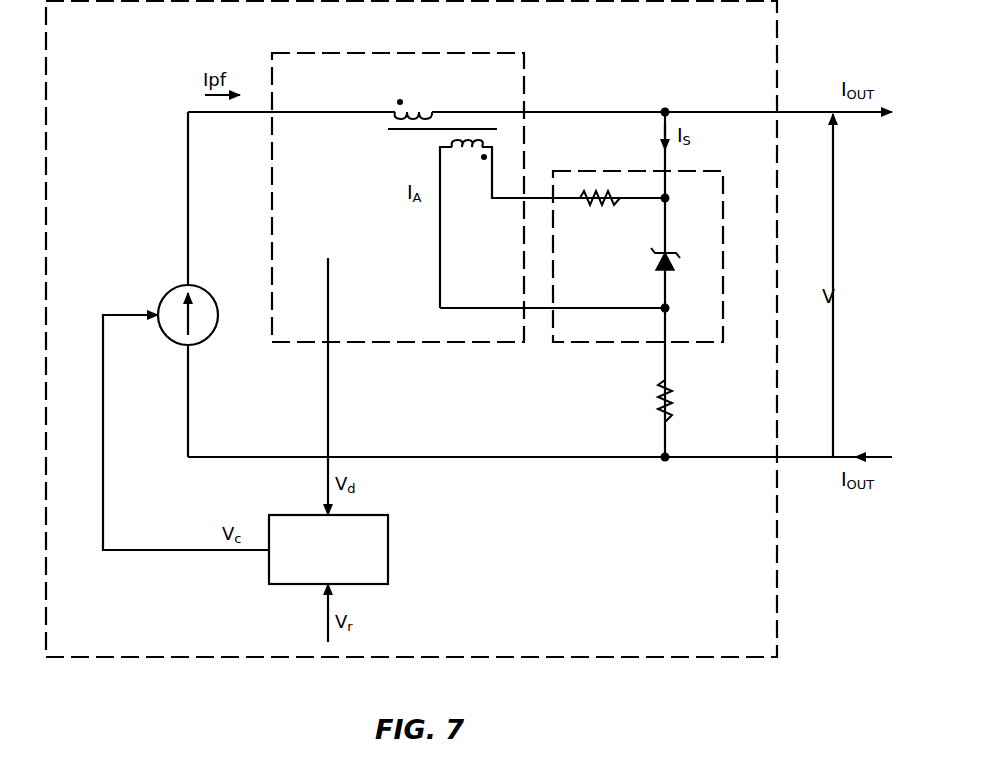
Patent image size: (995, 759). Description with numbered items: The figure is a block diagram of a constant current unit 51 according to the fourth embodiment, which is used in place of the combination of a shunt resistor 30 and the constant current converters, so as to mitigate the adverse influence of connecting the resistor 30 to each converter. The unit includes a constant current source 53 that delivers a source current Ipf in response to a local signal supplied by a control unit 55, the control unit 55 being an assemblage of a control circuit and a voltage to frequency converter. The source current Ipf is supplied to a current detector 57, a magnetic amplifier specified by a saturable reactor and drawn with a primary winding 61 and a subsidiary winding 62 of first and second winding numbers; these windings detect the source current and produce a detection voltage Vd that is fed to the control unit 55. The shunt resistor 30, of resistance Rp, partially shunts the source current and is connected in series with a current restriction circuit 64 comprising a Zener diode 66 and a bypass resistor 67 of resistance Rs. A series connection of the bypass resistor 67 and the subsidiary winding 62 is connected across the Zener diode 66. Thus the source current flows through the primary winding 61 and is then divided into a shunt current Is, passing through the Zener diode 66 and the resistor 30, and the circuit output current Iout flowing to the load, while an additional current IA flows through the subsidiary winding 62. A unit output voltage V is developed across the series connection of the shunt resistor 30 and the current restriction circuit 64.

The constant current unit 51 is at (777, 593).
The constant current source 53 is at (206, 291).
The control unit 55 is at (390, 557).
The current detector 57 is at (372, 345).
The primary winding 61 is at (412, 108).
The subsidiary winding 62 is at (467, 156).
The current restriction circuit 64 is at (612, 345).
The Zener diode 66 is at (672, 265).
The bypass resistor 67 is at (594, 206).
The shunt resistor 30 is at (672, 412).